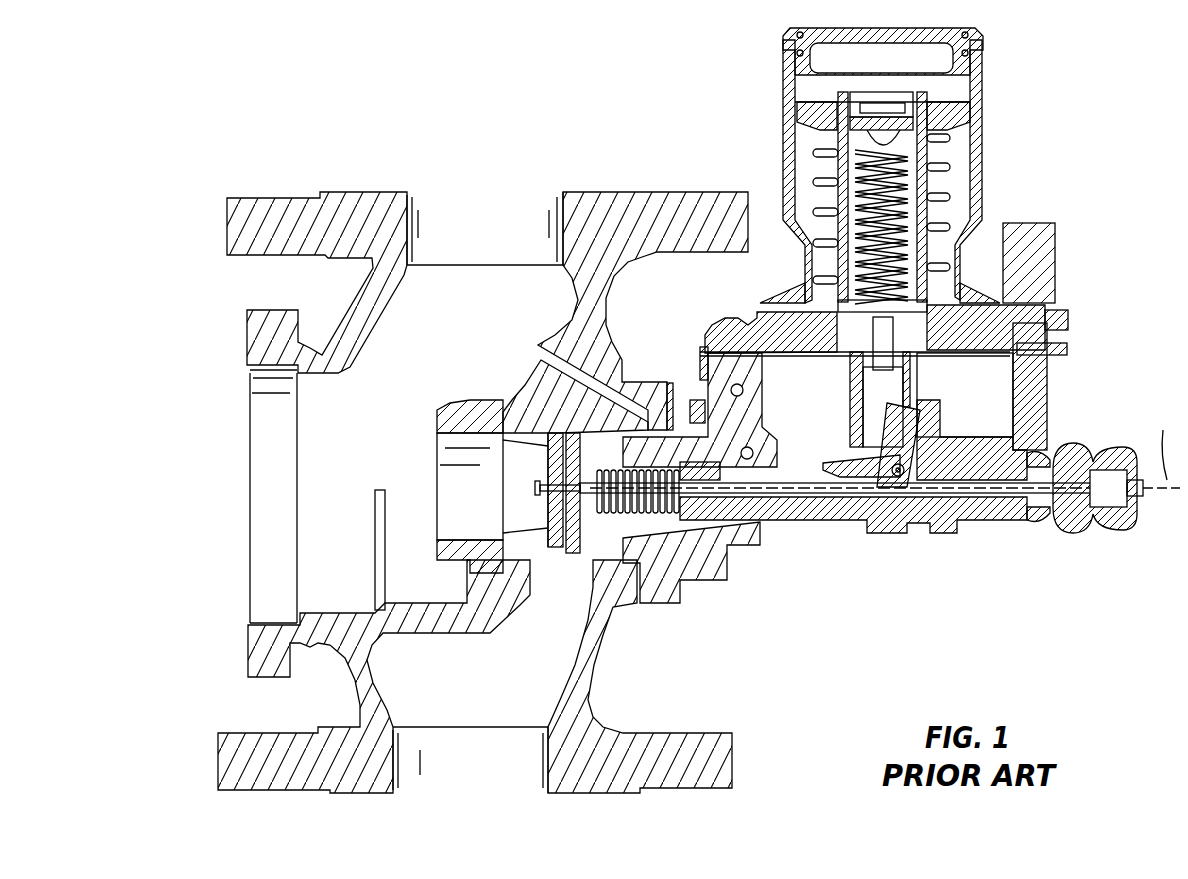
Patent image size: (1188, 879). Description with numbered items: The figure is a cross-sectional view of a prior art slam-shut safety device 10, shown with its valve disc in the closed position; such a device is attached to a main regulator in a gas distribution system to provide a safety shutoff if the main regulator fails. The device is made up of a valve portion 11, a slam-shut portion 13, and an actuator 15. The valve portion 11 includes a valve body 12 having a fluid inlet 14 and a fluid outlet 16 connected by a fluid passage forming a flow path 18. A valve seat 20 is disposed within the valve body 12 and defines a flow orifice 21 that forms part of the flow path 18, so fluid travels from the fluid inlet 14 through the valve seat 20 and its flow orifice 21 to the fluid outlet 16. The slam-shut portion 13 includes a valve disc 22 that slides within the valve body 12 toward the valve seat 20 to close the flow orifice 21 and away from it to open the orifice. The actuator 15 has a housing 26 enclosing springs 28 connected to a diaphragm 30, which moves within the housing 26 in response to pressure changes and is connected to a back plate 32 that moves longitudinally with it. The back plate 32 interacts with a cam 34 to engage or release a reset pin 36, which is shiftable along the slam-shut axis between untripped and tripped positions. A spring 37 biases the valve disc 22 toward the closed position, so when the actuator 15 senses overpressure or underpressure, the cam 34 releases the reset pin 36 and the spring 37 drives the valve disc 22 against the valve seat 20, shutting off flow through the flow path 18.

The slam-shut safety device 10 is at (463, 113).
The valve portion 11 is at (728, 680).
The valve body 12 is at (605, 655).
The slam-shut portion 13 is at (812, 578).
The fluid inlet 14 is at (463, 760).
The actuator 15 is at (1034, 132).
The fluid outlet 16 is at (448, 207).
The flow path 18 is at (345, 453).
The valve seat 20 is at (527, 432).
The flow orifice 21 is at (547, 508).
The valve disc 22 is at (570, 527).
The housing 26 is at (975, 100).
The springs 28 is at (950, 165).
The diaphragm 30 is at (965, 316).
The back plate 32 is at (848, 385).
The cam 34 is at (893, 440).
The reset pin 36 is at (943, 533).
The spring 37 is at (660, 470).